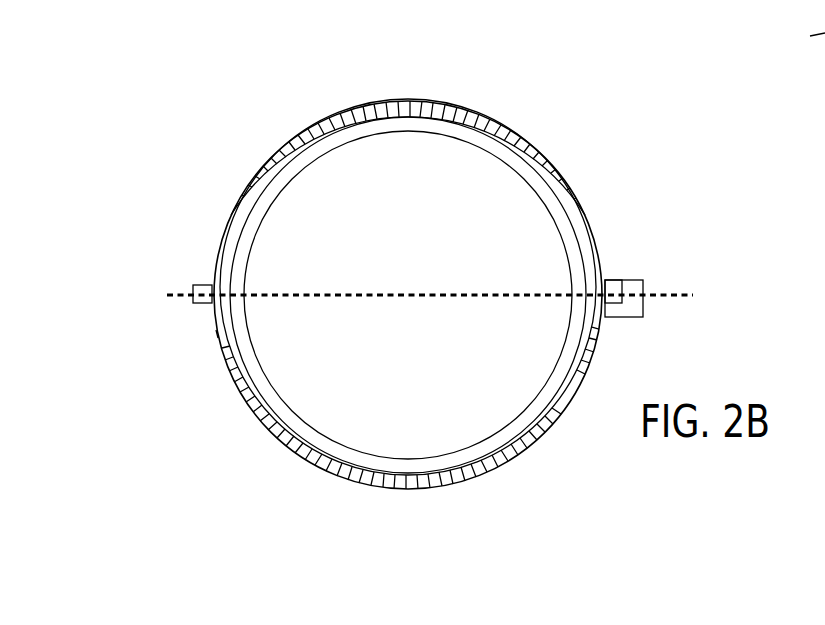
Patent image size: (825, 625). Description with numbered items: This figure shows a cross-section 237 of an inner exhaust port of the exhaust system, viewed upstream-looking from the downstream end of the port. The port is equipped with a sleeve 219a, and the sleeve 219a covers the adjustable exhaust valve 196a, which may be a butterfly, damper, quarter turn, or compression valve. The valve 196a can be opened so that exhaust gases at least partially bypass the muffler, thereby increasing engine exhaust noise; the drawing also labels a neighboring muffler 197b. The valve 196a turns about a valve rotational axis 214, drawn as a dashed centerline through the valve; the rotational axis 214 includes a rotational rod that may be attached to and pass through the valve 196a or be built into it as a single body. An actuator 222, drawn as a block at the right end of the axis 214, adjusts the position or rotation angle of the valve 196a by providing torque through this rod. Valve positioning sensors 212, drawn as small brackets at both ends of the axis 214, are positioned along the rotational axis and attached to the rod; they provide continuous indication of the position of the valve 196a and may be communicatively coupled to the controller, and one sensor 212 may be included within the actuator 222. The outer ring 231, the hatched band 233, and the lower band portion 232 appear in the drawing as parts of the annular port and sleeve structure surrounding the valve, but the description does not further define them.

The hoop 231 is at (461, 112).
The hatched band 233 is at (482, 122).
The lower band portion 232 is at (409, 294).
The sleeve 219a is at (546, 166).
The cross-section 237 is at (597, 113).
The adjustable exhaust valve 196a is at (433, 281).
The valve positioning sensor 212 is at (202, 285).
The actuator 222 is at (645, 294).
The valve rotational axis 214 is at (216, 338).
The adjacent component 197b is at (810, 36).